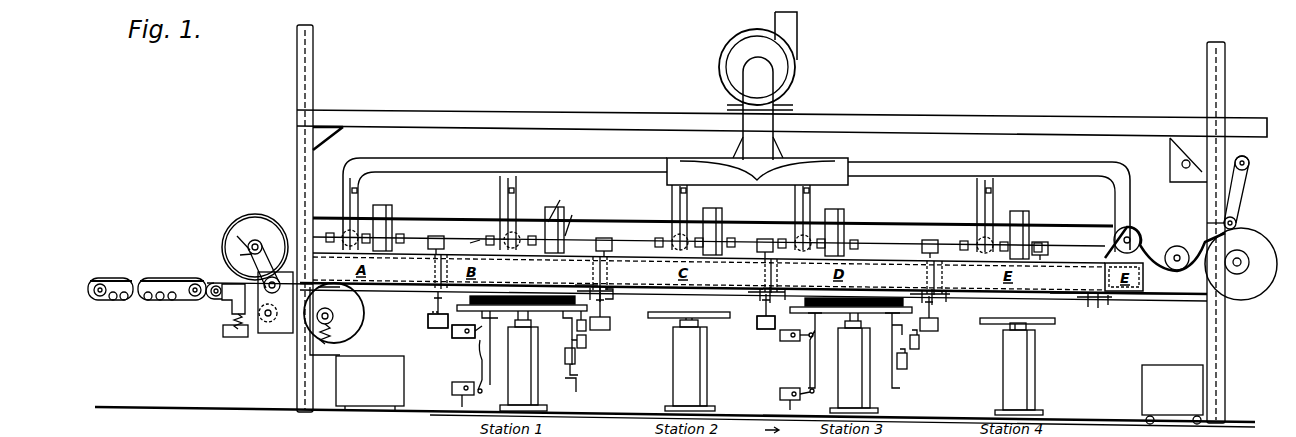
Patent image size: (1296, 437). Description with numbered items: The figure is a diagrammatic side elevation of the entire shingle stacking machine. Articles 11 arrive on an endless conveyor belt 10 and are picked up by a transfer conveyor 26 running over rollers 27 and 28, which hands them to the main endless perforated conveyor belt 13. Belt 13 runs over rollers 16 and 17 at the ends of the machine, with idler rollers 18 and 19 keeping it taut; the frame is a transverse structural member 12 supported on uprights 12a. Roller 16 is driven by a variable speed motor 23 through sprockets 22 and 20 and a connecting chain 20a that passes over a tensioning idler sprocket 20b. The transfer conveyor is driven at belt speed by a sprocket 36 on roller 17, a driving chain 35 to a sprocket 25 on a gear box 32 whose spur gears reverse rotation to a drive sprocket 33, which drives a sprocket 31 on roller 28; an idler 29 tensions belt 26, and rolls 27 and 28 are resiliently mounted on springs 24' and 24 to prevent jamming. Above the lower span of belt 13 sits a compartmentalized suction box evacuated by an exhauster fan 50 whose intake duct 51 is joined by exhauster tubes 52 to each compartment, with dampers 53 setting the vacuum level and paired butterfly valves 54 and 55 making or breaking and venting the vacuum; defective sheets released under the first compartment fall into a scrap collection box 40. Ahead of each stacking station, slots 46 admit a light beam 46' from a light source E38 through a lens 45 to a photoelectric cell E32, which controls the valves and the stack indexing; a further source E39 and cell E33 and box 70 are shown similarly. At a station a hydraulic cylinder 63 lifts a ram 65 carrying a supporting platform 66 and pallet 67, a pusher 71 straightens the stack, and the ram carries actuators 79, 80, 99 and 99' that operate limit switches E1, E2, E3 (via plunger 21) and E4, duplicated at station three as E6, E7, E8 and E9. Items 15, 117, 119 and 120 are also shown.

The endless conveyor belt 10 is at (128, 302).
The articles 11 is at (114, 276).
The transverse structural member 12 is at (958, 118).
The uprights 12a is at (315, 55).
The endless perforated conveyor belt 13 is at (262, 212).
The direction of travel 15 is at (782, 430).
The drive roller 16 is at (1232, 297).
The roller 17 is at (252, 214).
The idler roller 18 is at (1130, 226).
The idler roller 19 is at (1178, 247).
The sprocket 20 is at (1250, 250).
The connecting chain 20a is at (1238, 220).
The tensioning idler sprocket 20b is at (1224, 220).
The plunger 21 is at (578, 375).
The sprocket 22 is at (1242, 154).
The variable speed motor 23 is at (1170, 172).
The spring 24 is at (348, 321).
The spring 24' is at (213, 336).
The sprocket 25 is at (263, 258).
The transfer conveyor 26 is at (226, 312).
The roller 27 is at (212, 300).
The roller 28 is at (352, 307).
The idler 29 is at (238, 338).
The sprocket 31 is at (330, 305).
The gear box 32 is at (278, 340).
The drive sprocket 33 is at (264, 322).
The driving chain 35 is at (239, 253).
The sprocket 36 is at (236, 234).
The scrap collection box 40 is at (370, 383).
The lens 45 is at (430, 312).
The elongated slots 46 is at (695, 311).
The light beam 46' is at (756, 297).
The exhauster fan 50 is at (784, 70).
The intake duct 51 is at (582, 162).
The exhauster tubes 52 is at (342, 206).
The dampers 53 is at (350, 189).
The butterfly valve 54 is at (348, 247).
The vent valve 55 is at (385, 255).
The hydraulic cylinder 63 is at (523, 365).
The ram 65 is at (572, 330).
The supporting platform 66 is at (506, 335).
The pallet 67 is at (470, 325).
The sensor box 70 is at (604, 258).
The pusher 71 is at (578, 280).
The actuator 79 is at (481, 380).
The actuator 80 is at (480, 345).
The actuator 99 is at (577, 318).
The actuator 99' is at (588, 390).
The rod 117 is at (565, 203).
The piston 119 is at (466, 238).
The bracket 120 is at (581, 218).
The limit switch E1 is at (452, 335).
The limit switch E2 is at (452, 384).
The limit switch E3 is at (575, 356).
The limit switch E4 is at (586, 341).
The limit switch E6 is at (780, 338).
The limit switch E7 is at (780, 386).
The limit switch E8 is at (907, 361).
The limit switch E9 is at (919, 342).
The photoelectric cell E32 is at (428, 322).
The switch E33 is at (752, 332).
The light source E38 is at (436, 233).
The switch E39 is at (765, 236).